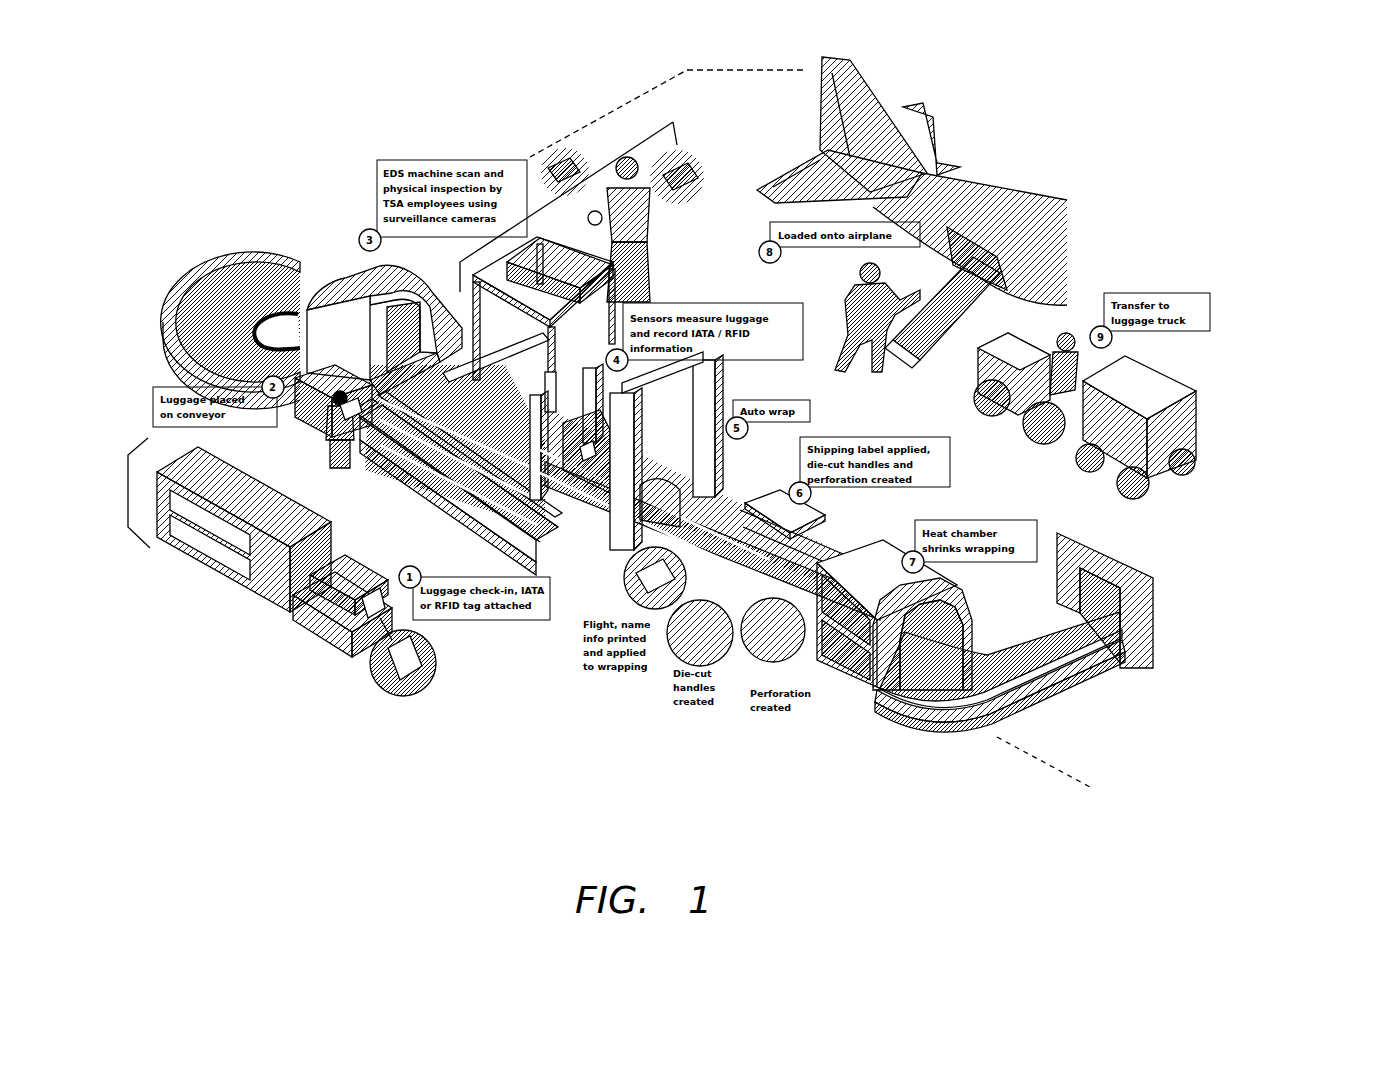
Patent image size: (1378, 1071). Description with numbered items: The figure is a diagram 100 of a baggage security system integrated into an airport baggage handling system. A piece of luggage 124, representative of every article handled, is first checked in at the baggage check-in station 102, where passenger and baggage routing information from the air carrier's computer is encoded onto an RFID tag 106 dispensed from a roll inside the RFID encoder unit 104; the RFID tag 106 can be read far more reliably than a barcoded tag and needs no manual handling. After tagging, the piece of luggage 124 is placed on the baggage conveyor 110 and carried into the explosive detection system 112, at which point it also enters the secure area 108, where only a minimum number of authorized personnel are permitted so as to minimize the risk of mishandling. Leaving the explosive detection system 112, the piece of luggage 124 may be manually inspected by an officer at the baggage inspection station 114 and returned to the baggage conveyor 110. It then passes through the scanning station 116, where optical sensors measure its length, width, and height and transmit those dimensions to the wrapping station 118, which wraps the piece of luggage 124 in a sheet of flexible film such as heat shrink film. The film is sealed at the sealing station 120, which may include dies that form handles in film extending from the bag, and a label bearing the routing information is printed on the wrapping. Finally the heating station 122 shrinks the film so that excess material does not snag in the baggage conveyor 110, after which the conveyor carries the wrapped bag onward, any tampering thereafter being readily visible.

The diagram 100 is at (1265, 170).
The baggage check-in station 102 is at (127, 493).
The RFID encoder unit 104 is at (310, 503).
The RFID tag 106 is at (423, 657).
The secure area 108 is at (660, 92).
The baggage conveyor 110 is at (243, 303).
The explosive detection system 112 is at (352, 258).
The baggage inspection station 114 is at (548, 165).
The scanning station 116 is at (637, 338).
The wrapping station 118 is at (710, 413).
The sealing station 120 is at (850, 518).
The heating station 122 is at (853, 687).
The piece of luggage 124 is at (563, 472).